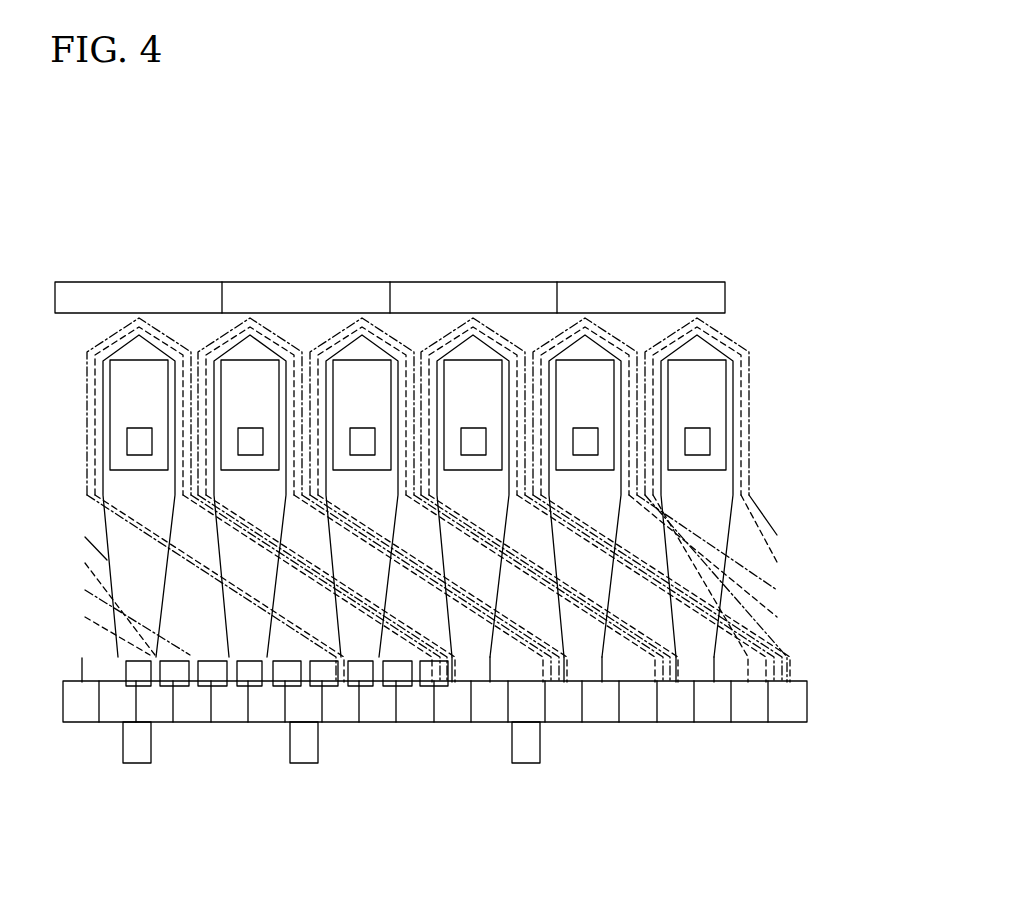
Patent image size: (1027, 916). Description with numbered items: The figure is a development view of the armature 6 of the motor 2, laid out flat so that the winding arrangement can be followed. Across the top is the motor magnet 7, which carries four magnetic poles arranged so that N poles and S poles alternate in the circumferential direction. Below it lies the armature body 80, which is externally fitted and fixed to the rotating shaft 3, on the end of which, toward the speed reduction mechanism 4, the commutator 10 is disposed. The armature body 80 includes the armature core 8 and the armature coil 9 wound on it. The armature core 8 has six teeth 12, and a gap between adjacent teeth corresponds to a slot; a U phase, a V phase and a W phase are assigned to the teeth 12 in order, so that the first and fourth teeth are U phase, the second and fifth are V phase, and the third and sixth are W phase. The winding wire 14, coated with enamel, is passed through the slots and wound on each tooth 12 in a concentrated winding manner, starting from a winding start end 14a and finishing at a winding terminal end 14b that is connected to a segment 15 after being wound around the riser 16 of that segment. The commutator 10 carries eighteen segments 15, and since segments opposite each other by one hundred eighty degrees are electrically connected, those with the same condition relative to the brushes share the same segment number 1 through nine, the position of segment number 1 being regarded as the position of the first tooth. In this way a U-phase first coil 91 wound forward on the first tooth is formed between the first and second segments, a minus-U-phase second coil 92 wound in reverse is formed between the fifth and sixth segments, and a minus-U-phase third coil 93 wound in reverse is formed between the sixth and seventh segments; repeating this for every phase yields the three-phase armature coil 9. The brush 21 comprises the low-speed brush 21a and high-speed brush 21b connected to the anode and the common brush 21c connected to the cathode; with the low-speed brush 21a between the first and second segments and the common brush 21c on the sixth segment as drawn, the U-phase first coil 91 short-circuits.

The motor 2 is at (612, 168).
The armature 6 is at (521, 272).
The motor magnet 7 is at (718, 281).
The armature core 8 is at (738, 381).
The armature coil 9 is at (755, 333).
The commutator 10 is at (714, 748).
The tooth 12 is at (727, 415).
The winding wire 14 is at (116, 641).
The winding start end 14a is at (116, 648).
The winding terminal end 14b is at (120, 652).
The segment 15 is at (793, 704).
The riser 16 is at (287, 673).
The brush 21 is at (362, 797).
The low-speed brush 21a is at (135, 765).
The high-speed brush 21b is at (524, 765).
The common brush 21c is at (302, 765).
The armature body 80 is at (780, 400).
The first coil 91 is at (120, 352).
The second coil 92 is at (162, 340).
The third coil 93 is at (97, 343).
The wire 1 is at (431, 527).
The rotating shaft 3 is at (431, 575).
The speed reduction mechanism 4 is at (431, 575).